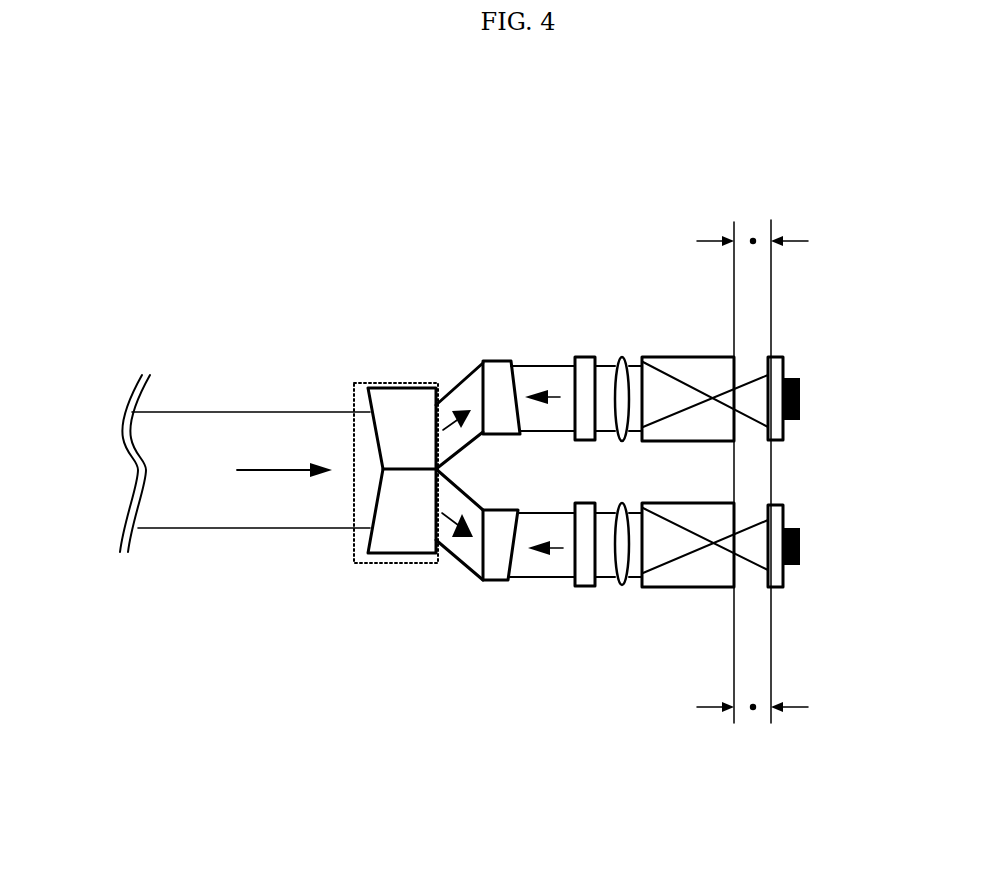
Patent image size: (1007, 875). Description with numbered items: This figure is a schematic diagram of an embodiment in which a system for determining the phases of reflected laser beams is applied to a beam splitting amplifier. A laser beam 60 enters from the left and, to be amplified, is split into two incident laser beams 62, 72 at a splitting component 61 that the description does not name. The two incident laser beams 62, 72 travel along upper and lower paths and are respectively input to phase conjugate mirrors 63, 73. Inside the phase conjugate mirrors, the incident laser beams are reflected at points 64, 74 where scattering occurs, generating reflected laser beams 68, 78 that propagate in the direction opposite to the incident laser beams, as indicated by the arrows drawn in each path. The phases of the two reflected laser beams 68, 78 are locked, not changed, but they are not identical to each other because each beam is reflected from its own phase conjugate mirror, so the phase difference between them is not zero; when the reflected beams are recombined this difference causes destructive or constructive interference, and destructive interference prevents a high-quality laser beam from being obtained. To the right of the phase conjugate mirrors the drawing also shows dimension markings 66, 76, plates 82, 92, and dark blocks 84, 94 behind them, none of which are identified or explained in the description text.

The laser beam 60 is at (280, 467).
The beam splitting prism 61 is at (377, 385).
The incident laser beam 62 is at (462, 400).
The incident laser beam 72 is at (458, 555).
The reflected laser beam 68 is at (542, 392).
The reflected laser beam 78 is at (538, 558).
The phase conjugate mirror 63 is at (657, 357).
The point where scattering occurs 64 is at (707, 398).
The phase conjugate mirror 73 is at (655, 587).
The point where scattering occurs 74 is at (705, 547).
The first gap 66 is at (753, 241).
The second gap 76 is at (753, 707).
The first transparent plate 82 is at (773, 353).
The first photodetector 84 is at (800, 378).
The second transparent plate 92 is at (772, 588).
The second photodetector 94 is at (800, 565).